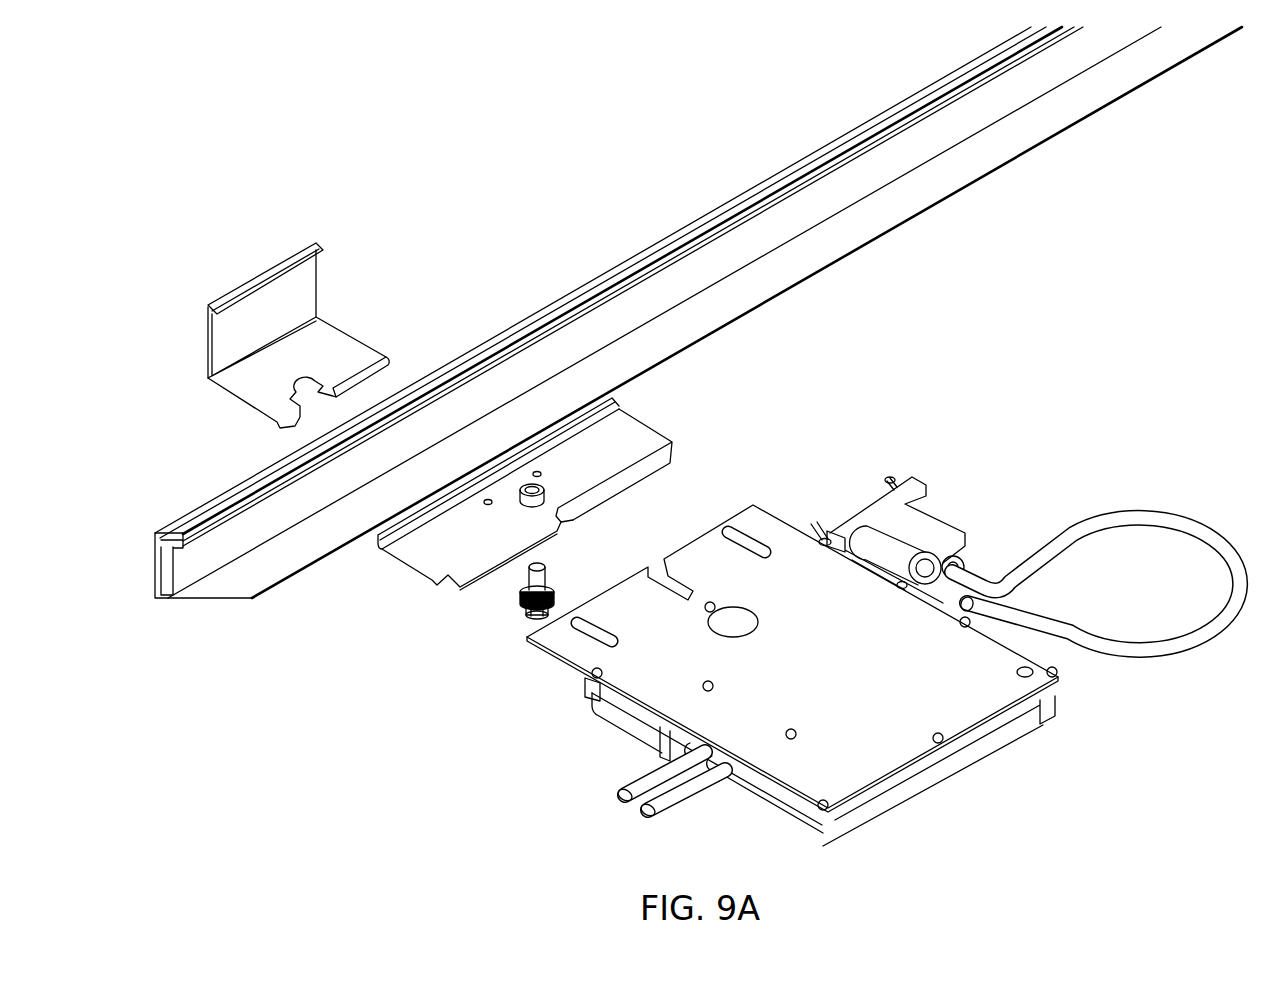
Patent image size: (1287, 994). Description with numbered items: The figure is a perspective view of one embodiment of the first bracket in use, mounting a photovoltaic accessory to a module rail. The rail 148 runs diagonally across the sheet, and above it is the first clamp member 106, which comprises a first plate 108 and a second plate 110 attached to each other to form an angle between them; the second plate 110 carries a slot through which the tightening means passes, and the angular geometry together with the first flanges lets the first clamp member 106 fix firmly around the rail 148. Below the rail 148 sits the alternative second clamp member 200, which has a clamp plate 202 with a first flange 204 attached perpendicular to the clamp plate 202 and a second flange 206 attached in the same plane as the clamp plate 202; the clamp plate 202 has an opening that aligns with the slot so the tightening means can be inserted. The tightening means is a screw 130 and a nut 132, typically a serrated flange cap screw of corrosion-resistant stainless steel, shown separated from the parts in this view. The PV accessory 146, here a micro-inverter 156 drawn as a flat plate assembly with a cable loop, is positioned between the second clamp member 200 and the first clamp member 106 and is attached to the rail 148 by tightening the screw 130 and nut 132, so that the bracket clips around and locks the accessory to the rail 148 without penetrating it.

The first clamp member 106 is at (310, 301).
The first plate 108 is at (303, 281).
The second plate 110 is at (350, 356).
The rail 148 is at (666, 243).
The second clamp member 200 is at (544, 513).
The clamp plate 202 is at (436, 576).
The first flange 204 is at (382, 543).
The second flange 206 is at (660, 461).
The nut 132 is at (546, 492).
The screw 130 is at (524, 603).
The PV accessory 146 is at (883, 661).
The micro-inverter 156 is at (880, 748).